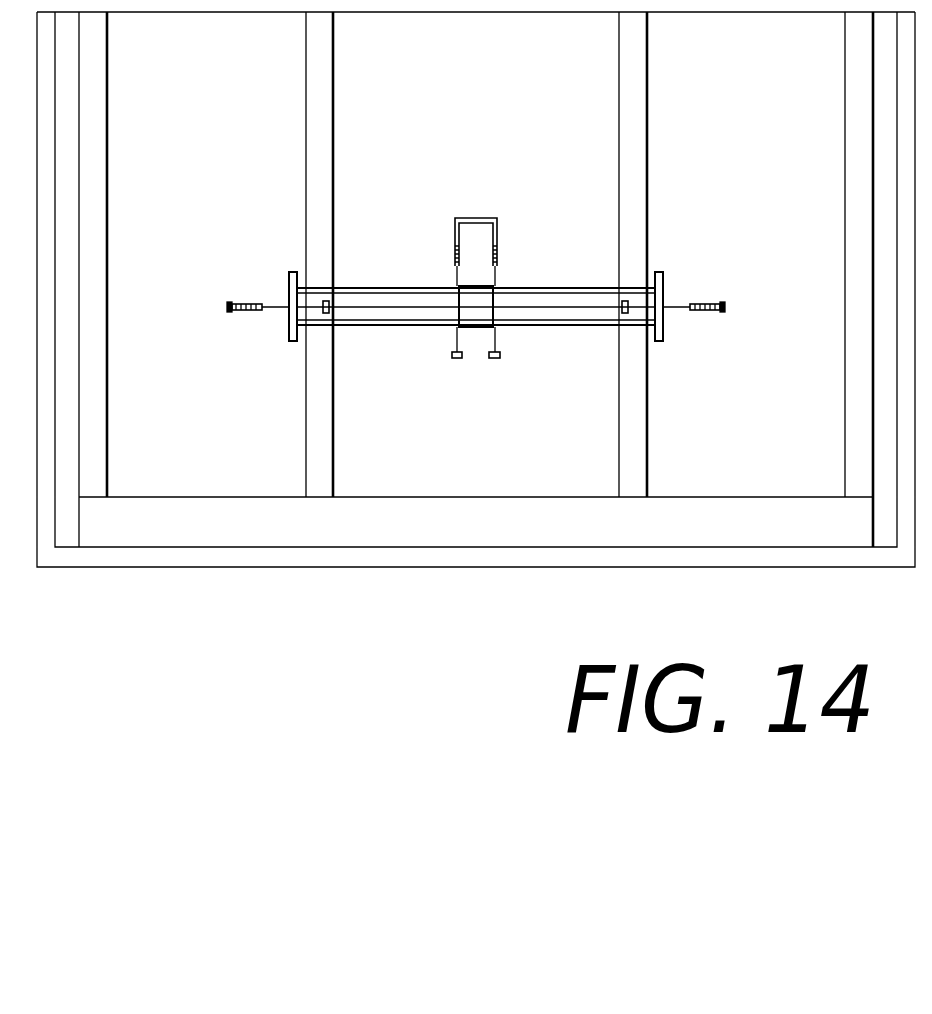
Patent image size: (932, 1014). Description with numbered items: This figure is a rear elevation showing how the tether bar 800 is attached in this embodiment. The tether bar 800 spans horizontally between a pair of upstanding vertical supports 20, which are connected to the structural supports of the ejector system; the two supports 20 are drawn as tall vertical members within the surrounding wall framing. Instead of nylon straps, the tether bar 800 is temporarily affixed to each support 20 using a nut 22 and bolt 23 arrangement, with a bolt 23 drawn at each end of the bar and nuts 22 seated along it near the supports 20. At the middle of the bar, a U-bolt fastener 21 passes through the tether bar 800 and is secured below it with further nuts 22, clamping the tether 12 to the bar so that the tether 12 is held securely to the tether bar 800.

The upstanding vertical support 20 is at (306, 150).
The tether bar 800 is at (377, 327).
The bolt 23 is at (252, 302).
The U-bolt fastener 21 is at (498, 218).
The tether 12 is at (492, 324).
The nut 22 is at (330, 306).